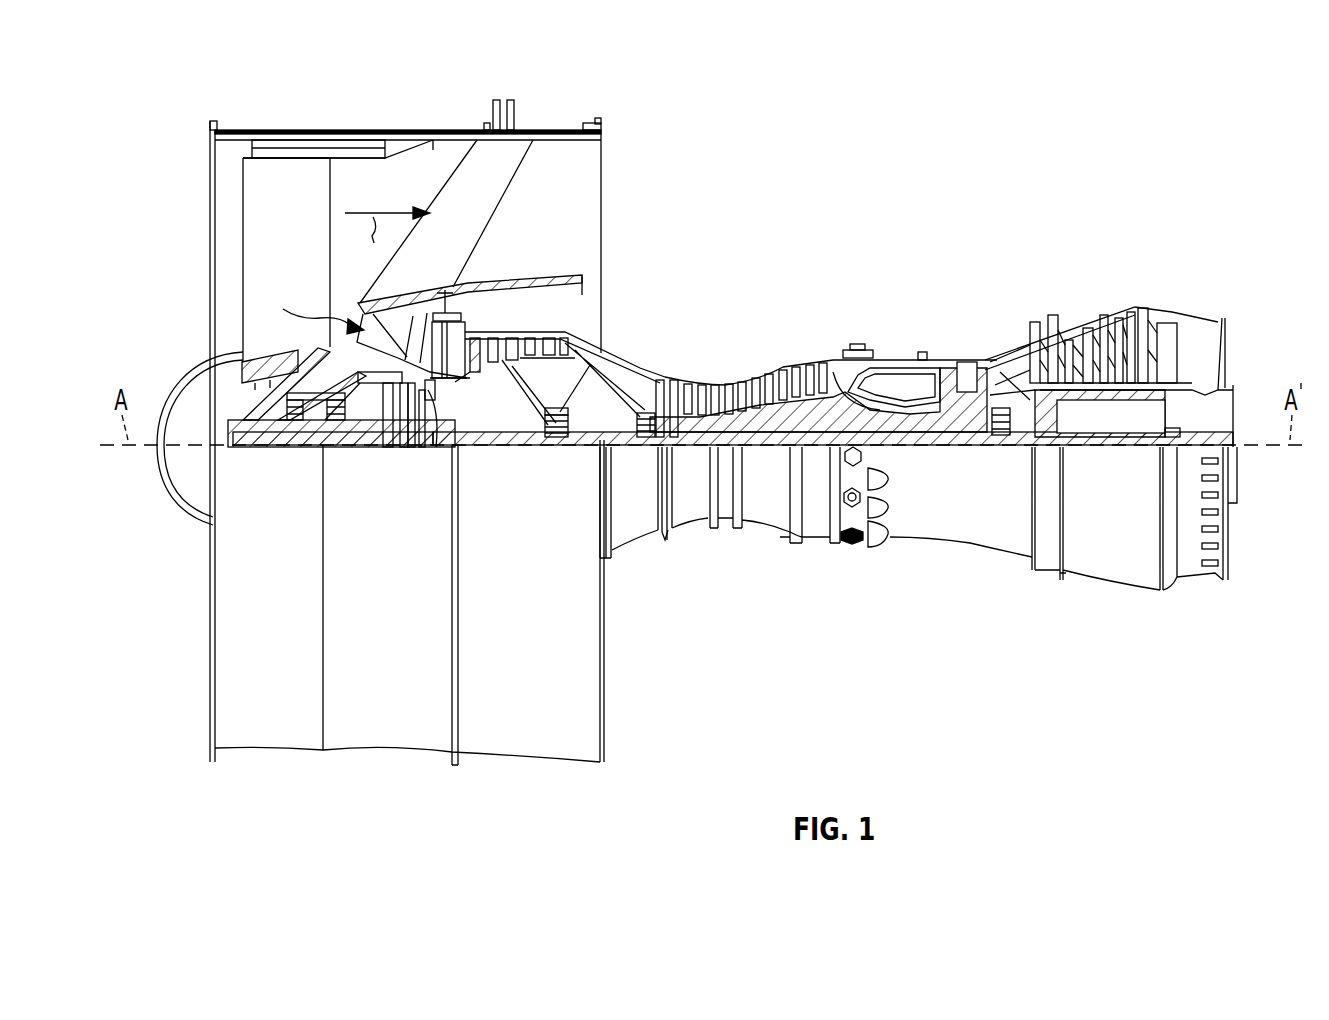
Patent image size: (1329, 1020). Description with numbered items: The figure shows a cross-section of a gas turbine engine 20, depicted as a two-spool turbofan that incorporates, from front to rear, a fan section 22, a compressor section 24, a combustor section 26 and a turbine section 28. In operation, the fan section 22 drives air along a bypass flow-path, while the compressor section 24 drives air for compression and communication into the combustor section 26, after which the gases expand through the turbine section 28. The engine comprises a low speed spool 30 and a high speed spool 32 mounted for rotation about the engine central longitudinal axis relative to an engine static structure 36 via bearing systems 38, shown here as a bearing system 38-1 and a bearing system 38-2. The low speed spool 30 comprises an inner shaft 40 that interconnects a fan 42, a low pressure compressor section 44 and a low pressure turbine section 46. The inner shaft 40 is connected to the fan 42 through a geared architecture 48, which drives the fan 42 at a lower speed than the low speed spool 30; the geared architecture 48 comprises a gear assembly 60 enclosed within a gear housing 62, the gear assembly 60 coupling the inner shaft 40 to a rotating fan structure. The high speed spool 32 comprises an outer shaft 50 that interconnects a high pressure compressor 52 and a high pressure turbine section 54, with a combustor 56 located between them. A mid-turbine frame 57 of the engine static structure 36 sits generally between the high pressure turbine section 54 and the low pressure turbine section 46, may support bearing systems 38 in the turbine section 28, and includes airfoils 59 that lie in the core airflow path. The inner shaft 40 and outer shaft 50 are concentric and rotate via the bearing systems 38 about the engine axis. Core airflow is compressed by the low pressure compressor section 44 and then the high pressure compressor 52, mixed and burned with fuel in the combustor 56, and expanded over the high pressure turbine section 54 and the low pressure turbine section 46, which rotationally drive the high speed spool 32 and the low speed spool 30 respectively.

The gas turbine engine 20 is at (673, 446).
The fan section 22 is at (379, 293).
The compressor section 24 is at (833, 319).
The combustor section 26 is at (889, 302).
The turbine section 28 is at (1091, 392).
The low speed spool 30 is at (719, 512).
The high speed spool 32 is at (814, 421).
The engine static structure 36 is at (571, 476).
The bearing systems 38 is at (1004, 458).
The bearing system 38-1 is at (341, 443).
The bearing system 38-2 is at (540, 458).
The inner shaft 40 is at (445, 511).
The fan 42 is at (409, 461).
The low pressure compressor section 44 is at (619, 354).
The low pressure turbine section 46 is at (1107, 351).
The geared architecture 48 is at (346, 460).
The outer shaft 50 is at (882, 497).
The high pressure compressor 52 is at (769, 362).
The high pressure turbine section 54 is at (964, 344).
The combustor 56 is at (886, 359).
The mid-turbine frame 57 is at (1015, 336).
The airfoils 59 is at (1042, 322).
The gear assembly 60 is at (396, 451).
The gear housing 62 is at (426, 450).